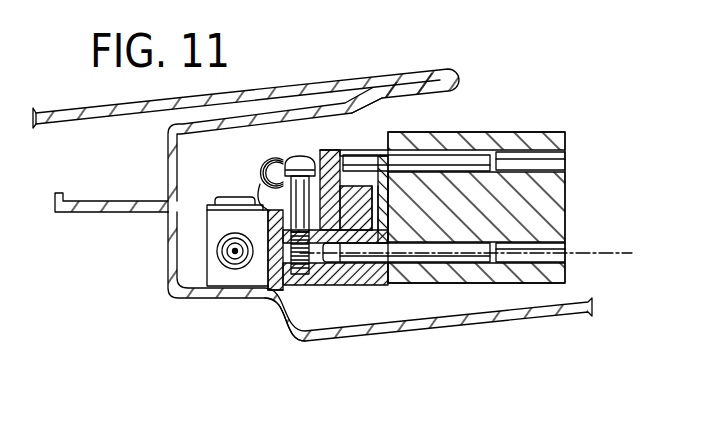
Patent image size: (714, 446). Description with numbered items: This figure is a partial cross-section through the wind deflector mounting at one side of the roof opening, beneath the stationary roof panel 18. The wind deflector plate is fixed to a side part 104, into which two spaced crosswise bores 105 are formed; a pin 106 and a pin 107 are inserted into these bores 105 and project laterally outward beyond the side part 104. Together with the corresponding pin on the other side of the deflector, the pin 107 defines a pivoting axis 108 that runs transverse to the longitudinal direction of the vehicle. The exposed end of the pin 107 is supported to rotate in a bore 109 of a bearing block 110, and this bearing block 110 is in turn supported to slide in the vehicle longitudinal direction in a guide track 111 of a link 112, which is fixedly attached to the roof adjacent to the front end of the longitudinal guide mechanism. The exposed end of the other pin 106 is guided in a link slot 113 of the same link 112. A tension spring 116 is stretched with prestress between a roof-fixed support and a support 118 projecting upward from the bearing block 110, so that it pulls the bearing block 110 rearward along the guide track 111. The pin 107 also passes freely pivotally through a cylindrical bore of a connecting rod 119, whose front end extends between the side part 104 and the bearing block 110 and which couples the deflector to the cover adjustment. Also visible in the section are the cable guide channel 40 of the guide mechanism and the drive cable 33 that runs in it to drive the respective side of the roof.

The stationary roof panel 18 is at (62, 113).
The cable guide channel 40 is at (222, 257).
The drive cable 33 is at (237, 271).
The side part 104 is at (527, 210).
The crosswise bores 105 is at (538, 160).
The pin 106 is at (463, 157).
The pin 107 is at (453, 263).
The pivoting axis 108 is at (622, 254).
The bore 109 is at (312, 290).
The bearing block 110 is at (358, 293).
The guide track 111 is at (276, 318).
The link 112 is at (327, 152).
The link slot 113 is at (358, 152).
The tension spring 116 is at (265, 152).
The support 118 is at (298, 153).
The connecting rod 119 is at (378, 290).